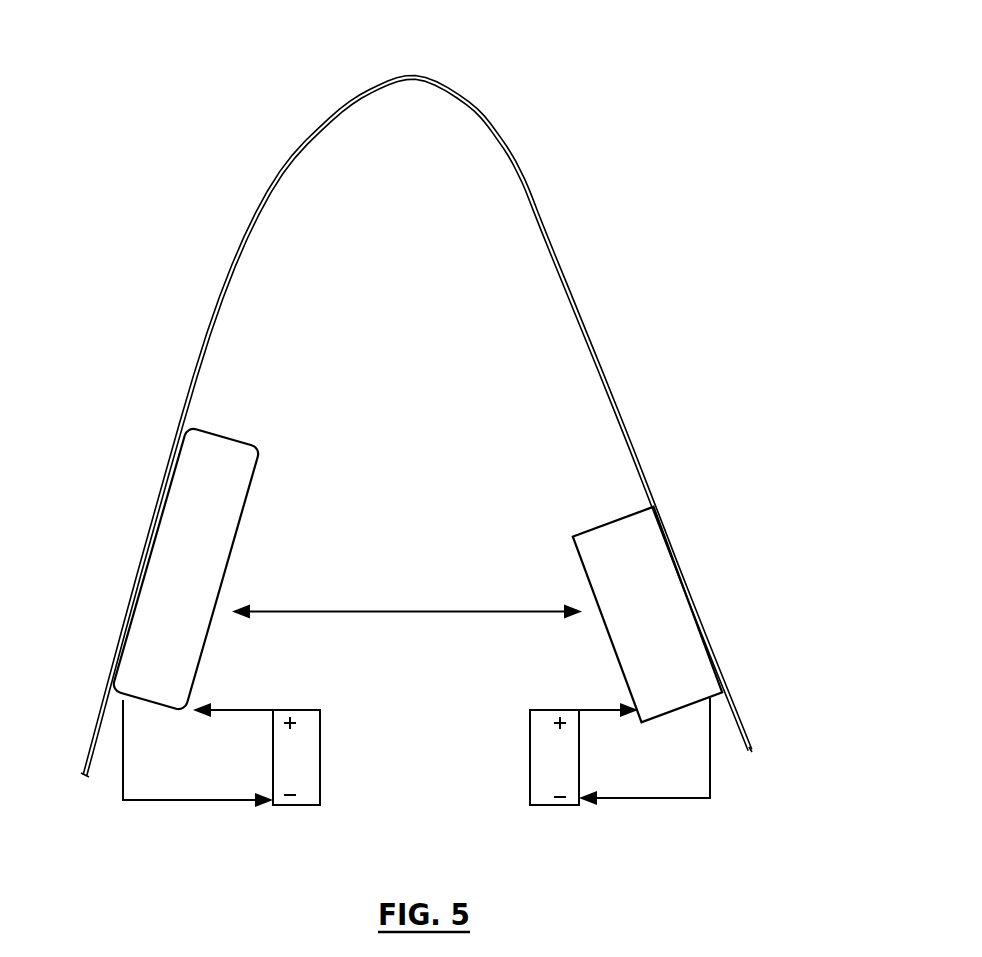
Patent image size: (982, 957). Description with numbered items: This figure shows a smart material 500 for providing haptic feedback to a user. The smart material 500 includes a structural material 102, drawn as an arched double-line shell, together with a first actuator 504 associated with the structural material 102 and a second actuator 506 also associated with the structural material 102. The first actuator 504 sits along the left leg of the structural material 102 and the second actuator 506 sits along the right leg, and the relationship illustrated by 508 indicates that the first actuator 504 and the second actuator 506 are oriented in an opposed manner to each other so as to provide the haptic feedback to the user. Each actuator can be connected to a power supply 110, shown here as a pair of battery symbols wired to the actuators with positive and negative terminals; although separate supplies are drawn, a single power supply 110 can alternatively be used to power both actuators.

The system 500 is at (192, 182).
The structural material 102 is at (522, 178).
The first actuator 504 is at (238, 440).
The second actuator 506 is at (663, 577).
The opposed orientation 508 is at (407, 598).
The power supply 110 is at (320, 743).